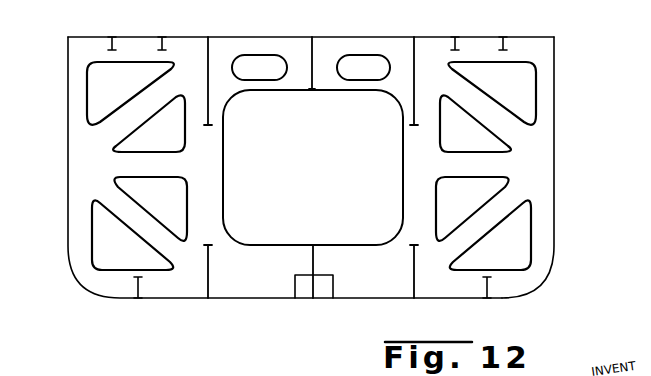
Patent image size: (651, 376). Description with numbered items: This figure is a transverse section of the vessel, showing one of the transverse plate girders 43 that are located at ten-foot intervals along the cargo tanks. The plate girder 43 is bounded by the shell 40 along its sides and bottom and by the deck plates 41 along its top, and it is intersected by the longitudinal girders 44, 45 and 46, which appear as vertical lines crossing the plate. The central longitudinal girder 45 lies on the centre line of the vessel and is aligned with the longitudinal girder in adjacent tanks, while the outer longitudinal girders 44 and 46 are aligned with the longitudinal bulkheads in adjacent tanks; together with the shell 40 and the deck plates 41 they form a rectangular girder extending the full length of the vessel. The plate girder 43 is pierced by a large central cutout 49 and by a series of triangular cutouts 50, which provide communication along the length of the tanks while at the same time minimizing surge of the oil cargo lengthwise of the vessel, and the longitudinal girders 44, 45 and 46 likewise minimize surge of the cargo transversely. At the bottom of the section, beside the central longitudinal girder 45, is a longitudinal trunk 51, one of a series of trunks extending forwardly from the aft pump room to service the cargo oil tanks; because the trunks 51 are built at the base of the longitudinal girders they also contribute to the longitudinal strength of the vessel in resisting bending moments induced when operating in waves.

The shell 40 is at (236, 300).
The deck plates 41 is at (362, 36).
The transverse plate girder 43 is at (540, 163).
The outer longitudinal girder 44 is at (414, 66).
The central longitudinal girder 45 is at (312, 48).
The outer longitudinal girder 46 is at (208, 102).
The cutout 49 is at (395, 183).
The cutouts 50 is at (500, 137).
The longitudinal trunk 51 is at (303, 290).